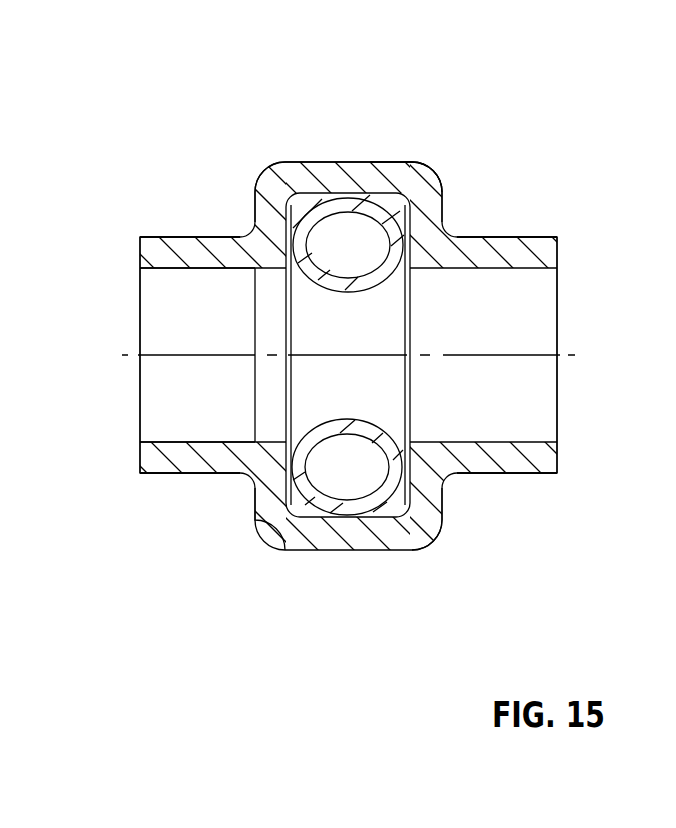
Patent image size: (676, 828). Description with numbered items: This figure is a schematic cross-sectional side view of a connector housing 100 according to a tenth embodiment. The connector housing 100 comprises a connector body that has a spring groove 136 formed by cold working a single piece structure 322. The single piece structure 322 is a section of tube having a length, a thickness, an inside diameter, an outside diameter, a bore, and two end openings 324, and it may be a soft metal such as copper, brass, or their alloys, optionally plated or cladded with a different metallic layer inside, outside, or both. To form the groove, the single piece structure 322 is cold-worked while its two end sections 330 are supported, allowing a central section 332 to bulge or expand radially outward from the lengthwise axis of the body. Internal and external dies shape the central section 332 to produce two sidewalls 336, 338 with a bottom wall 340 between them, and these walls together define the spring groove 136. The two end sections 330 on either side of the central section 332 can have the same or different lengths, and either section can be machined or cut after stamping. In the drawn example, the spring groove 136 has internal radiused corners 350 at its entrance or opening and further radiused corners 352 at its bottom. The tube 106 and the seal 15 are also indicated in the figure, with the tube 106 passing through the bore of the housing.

The connector housing 100 is at (519, 92).
The tube 106 is at (230, 315).
The seal 15 is at (373, 422).
The spring groove 136 is at (357, 462).
The single piece structure 322 is at (172, 473).
The end openings 324 is at (140, 270).
The end sections 330 is at (175, 242).
The central section 332 is at (403, 162).
The sidewall 336 is at (248, 208).
The sidewall 338 is at (448, 195).
The bottom wall 340 is at (345, 161).
The internal radiused corners 350 is at (407, 277).
The radiused corners 352 is at (437, 528).